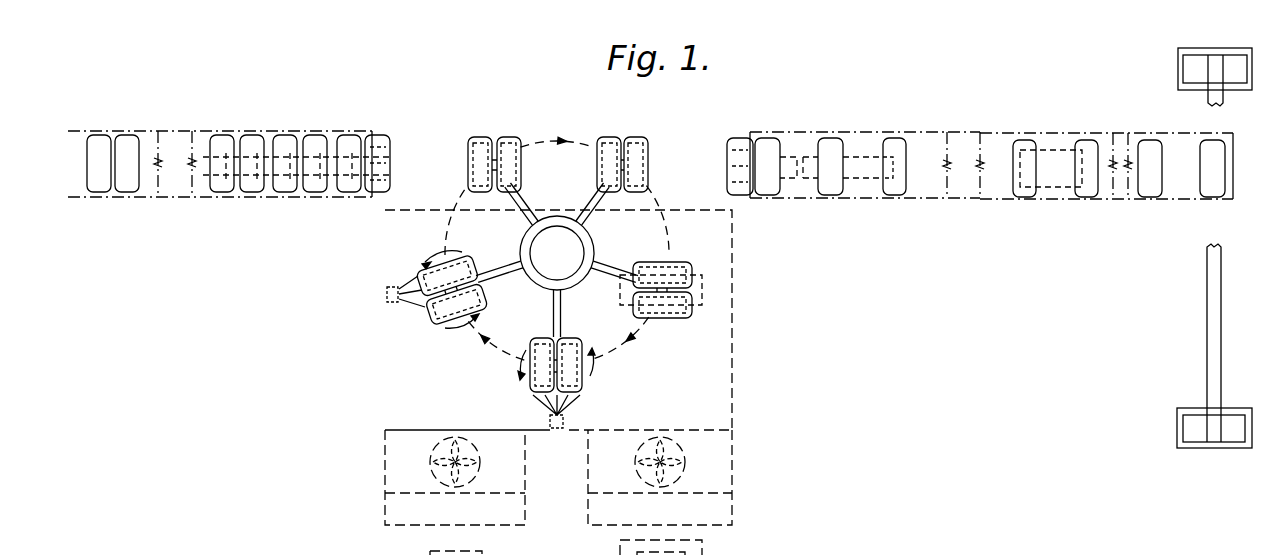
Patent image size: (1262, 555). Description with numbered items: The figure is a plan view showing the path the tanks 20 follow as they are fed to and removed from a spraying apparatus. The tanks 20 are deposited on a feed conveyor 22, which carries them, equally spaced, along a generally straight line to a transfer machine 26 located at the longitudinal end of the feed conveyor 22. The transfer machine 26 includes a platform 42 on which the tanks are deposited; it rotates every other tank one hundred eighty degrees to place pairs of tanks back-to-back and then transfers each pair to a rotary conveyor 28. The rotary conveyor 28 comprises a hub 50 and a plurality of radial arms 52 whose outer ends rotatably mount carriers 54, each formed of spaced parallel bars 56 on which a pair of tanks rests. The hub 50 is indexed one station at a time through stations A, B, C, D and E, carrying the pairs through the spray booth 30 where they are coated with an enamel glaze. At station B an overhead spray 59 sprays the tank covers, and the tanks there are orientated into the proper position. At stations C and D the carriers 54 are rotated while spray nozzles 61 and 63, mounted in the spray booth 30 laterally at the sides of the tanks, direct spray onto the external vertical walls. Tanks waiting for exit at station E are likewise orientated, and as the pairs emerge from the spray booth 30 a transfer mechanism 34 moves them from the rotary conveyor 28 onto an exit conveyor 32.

The tanks 20 is at (905, 142).
The feed conveyor 22 is at (1040, 123).
The transfer machine 26 is at (747, 129).
The rotary conveyor 28 is at (545, 133).
The spray booth 30 is at (735, 340).
The exit conveyor 32 is at (218, 118).
The transfer mechanism 34 is at (377, 147).
The platform 42 is at (727, 191).
The hub 50 is at (573, 283).
The radial arms 52 is at (552, 314).
The carriers 54 is at (632, 165).
The spaced parallel bars 56 is at (607, 136).
The overhead spray 59 is at (705, 287).
The spray nozzle 61 is at (565, 421).
The spray nozzle 63 is at (394, 304).
The station A is at (636, 148).
The station B is at (693, 269).
The station C is at (527, 394).
The station D is at (420, 267).
The station E is at (495, 134).